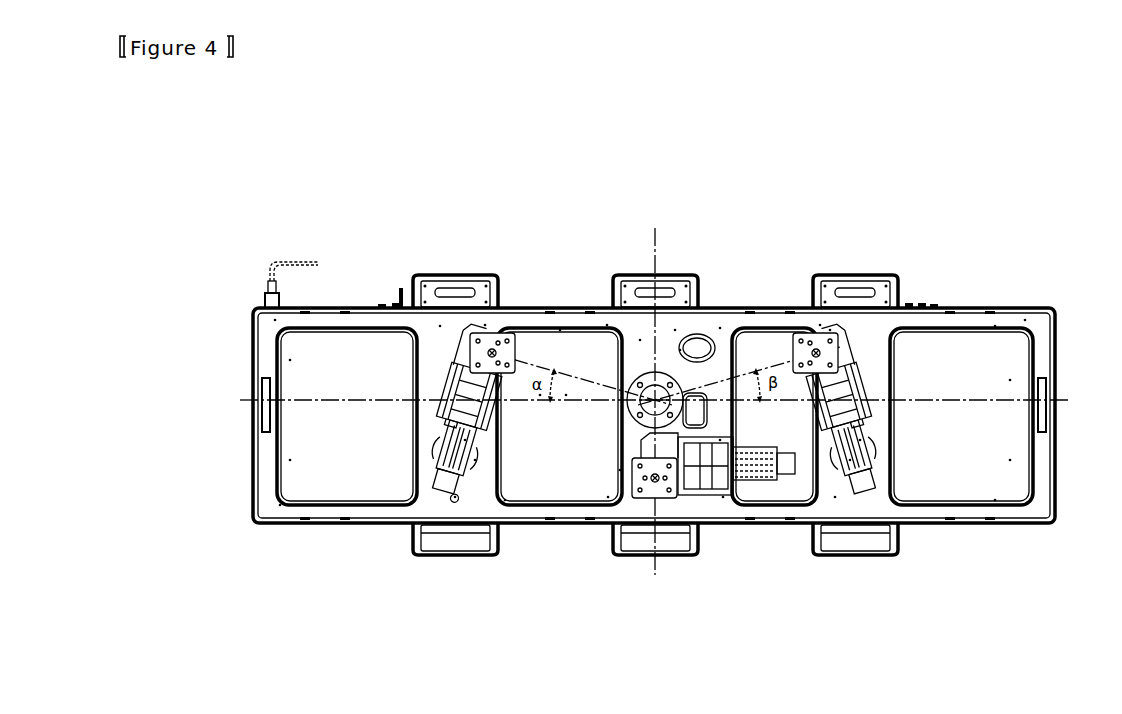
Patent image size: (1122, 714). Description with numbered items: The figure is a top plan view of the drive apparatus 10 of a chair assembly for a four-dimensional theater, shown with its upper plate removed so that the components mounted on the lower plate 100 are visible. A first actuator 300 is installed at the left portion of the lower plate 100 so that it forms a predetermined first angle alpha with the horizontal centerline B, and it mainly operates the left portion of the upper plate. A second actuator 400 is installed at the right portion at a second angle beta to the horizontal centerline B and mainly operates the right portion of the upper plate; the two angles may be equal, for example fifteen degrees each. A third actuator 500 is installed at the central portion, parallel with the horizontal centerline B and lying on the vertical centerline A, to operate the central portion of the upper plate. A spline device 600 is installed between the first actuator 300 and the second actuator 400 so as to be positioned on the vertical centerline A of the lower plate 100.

The drive apparatus 10 is at (343, 161).
The lower plate 100 is at (1032, 510).
The first actuator 300 is at (445, 500).
The second actuator 400 is at (869, 499).
The third actuator 500 is at (700, 502).
The spline device 600 is at (645, 372).